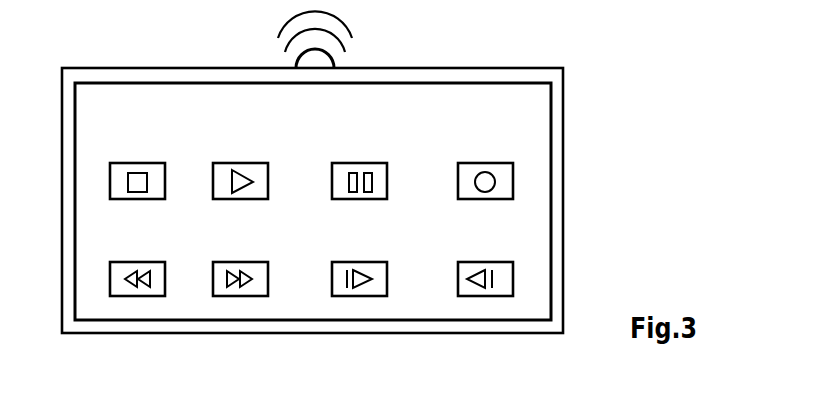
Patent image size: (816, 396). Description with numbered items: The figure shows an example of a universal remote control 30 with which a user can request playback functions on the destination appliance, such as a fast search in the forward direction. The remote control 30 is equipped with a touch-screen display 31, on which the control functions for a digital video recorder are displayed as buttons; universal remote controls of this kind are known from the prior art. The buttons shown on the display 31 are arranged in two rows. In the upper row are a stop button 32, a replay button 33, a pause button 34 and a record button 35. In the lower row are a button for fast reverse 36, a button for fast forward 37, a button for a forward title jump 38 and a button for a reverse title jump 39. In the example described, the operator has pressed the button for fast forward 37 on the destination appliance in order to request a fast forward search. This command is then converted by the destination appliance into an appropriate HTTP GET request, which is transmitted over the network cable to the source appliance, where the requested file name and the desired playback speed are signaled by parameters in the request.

The remote control 30 is at (557, 157).
The touch-screen display 31 is at (537, 295).
The stop button 32 is at (156, 172).
The replay button 33 is at (256, 172).
The pause button 34 is at (376, 172).
The record button 35 is at (468, 172).
The button for fast reverse 36 is at (156, 268).
The button for fast forward 37 is at (256, 268).
The button for a forward title jump 38 is at (376, 268).
The button for a reverse title jump 39 is at (468, 268).